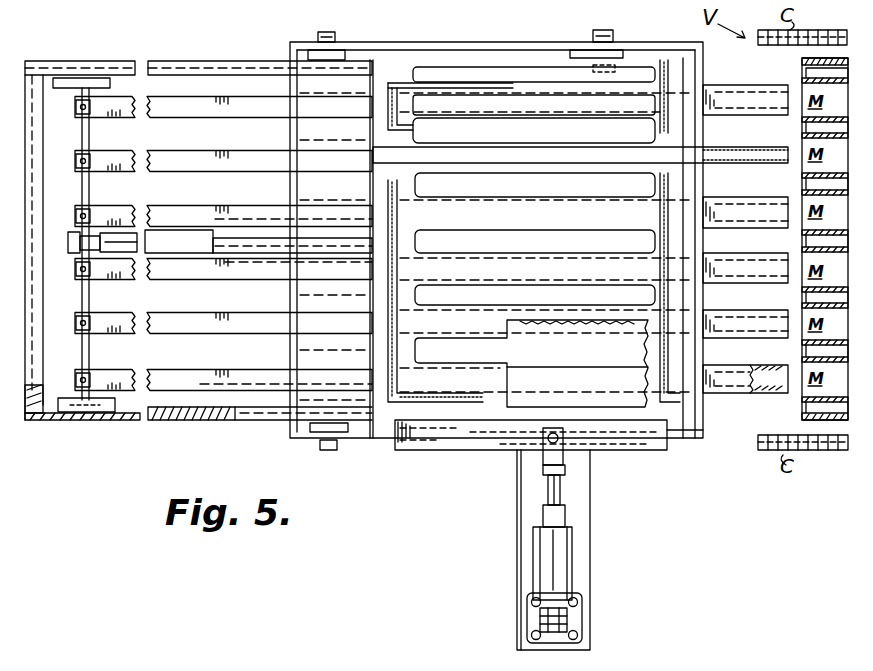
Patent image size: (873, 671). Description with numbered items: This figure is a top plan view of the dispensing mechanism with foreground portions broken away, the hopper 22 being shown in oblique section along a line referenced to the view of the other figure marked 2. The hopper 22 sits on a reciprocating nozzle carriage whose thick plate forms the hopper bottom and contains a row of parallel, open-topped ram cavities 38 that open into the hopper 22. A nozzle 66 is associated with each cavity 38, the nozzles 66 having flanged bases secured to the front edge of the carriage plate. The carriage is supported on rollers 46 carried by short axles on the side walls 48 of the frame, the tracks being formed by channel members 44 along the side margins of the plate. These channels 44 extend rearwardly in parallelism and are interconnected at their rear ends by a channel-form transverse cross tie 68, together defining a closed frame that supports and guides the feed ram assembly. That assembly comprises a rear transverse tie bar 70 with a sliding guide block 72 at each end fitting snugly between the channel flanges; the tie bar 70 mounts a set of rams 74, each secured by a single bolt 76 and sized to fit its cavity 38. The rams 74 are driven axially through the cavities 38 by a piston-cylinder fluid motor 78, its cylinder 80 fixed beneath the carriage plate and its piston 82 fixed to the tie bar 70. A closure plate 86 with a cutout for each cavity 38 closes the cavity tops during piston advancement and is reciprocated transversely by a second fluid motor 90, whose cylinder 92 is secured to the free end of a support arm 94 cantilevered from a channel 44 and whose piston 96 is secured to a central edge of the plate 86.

The hopper 22 is at (470, 85).
The ram cavity 38 is at (498, 160).
The channel member 44 is at (198, 64).
The roller 46 is at (328, 55).
The side wall 48 is at (452, 42).
The nozzle 66 is at (740, 96).
The transverse cross tie 68 is at (36, 214).
The tie bar 70 is at (90, 355).
The sliding guide block 72 is at (98, 78).
The ram 74 is at (190, 114).
The bolt 76 is at (76, 107).
The fluid motor 78 is at (260, 272).
The cylinder 80 is at (325, 252).
The piston 82 is at (190, 236).
The closure plate 86 is at (465, 443).
The fluid motor 90 is at (516, 557).
The cylinder 92 is at (557, 567).
The support arm 94 is at (528, 512).
The piston 96 is at (567, 495).
The section line 2 is at (55, 271).